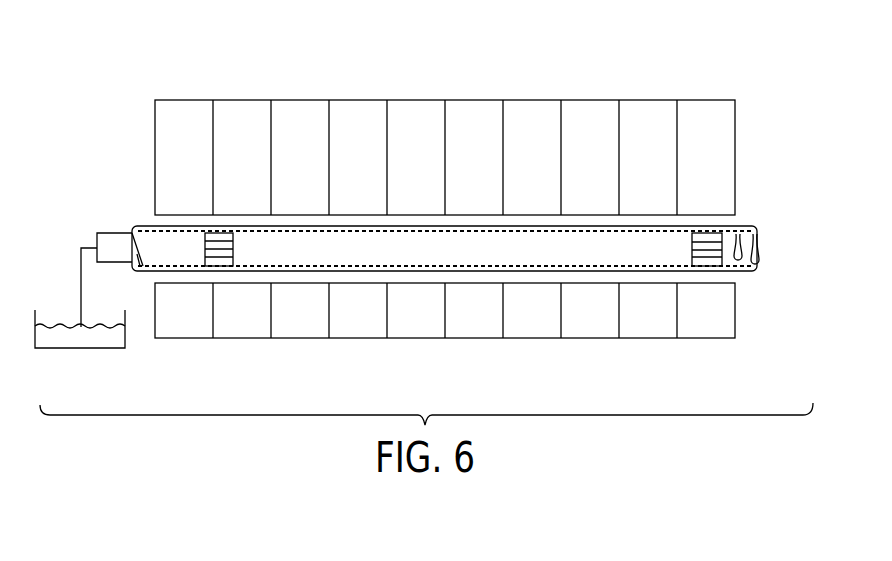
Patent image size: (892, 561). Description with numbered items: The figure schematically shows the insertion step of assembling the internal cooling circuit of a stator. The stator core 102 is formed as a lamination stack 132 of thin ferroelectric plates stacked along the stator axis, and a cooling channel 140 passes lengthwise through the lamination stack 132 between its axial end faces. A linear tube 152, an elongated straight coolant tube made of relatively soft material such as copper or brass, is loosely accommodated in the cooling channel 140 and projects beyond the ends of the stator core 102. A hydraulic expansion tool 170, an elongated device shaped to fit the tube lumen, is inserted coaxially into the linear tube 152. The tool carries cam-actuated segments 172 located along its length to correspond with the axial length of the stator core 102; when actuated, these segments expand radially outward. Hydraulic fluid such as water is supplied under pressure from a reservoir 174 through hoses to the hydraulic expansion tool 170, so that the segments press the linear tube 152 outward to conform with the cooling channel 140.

The stator core 102 is at (130, 88).
The lamination stack 132 is at (414, 115).
The cooling channels 140 is at (147, 220).
The linear tubes 152 is at (748, 241).
The hydraulic expansion tool 170 is at (107, 243).
The cam-actuated segments 172 is at (218, 253).
The reservoir 174 is at (91, 340).